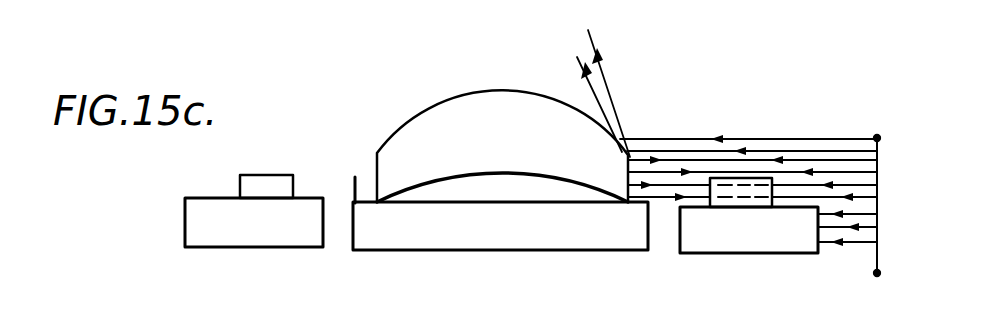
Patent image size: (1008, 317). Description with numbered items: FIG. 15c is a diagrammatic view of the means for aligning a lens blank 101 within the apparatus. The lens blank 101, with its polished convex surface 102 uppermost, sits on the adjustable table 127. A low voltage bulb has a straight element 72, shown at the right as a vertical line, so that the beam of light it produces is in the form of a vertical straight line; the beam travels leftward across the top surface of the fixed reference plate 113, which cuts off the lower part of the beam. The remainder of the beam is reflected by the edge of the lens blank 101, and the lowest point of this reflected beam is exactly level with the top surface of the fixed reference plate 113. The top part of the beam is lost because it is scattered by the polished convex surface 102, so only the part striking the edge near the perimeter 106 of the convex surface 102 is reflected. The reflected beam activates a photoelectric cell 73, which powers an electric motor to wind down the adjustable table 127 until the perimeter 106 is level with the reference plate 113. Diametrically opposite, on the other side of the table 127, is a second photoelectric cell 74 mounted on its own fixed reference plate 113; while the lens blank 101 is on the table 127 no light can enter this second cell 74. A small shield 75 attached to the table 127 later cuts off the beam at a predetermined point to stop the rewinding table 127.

The straight element 72 is at (878, 138).
The photoelectric cell 73 is at (742, 193).
The second photoelectric cell 74 is at (241, 188).
The small shield 75 is at (353, 186).
The lens blank 101 is at (430, 142).
The polished convex surface 102 is at (533, 92).
The perimeter 106 is at (635, 157).
The fixed reference plate 113 is at (260, 248).
The adjustable table 127 is at (508, 230).